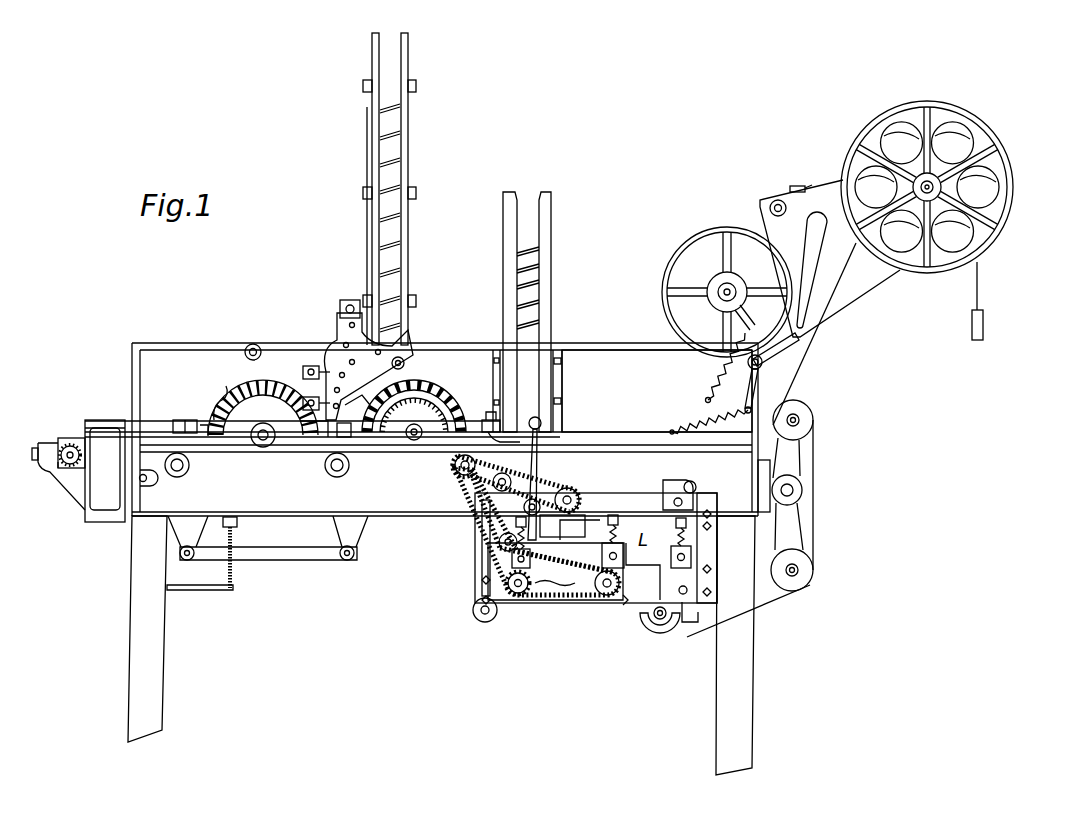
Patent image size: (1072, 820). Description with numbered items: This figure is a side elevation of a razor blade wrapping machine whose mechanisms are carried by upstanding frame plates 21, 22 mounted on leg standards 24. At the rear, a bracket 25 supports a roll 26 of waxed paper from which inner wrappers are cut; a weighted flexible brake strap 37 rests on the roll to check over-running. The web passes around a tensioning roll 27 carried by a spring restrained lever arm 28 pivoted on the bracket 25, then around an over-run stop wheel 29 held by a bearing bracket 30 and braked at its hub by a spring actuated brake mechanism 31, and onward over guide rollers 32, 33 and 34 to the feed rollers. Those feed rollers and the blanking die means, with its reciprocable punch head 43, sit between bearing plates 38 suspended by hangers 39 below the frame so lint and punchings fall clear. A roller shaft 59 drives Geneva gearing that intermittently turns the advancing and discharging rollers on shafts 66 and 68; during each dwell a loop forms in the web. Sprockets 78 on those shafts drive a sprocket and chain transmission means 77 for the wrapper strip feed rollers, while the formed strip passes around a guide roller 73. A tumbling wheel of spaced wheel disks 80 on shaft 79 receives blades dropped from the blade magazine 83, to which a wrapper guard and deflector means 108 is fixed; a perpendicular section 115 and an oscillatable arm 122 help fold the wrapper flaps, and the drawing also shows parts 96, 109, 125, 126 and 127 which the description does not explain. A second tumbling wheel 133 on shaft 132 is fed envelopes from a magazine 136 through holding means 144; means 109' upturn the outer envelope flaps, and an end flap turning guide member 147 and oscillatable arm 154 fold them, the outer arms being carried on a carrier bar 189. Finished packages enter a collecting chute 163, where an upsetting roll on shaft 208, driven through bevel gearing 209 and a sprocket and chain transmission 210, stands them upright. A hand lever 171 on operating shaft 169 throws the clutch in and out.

The frame plate 21 is at (398, 504).
The frame plate 22 is at (572, 352).
The leg standards 24 is at (155, 638).
The bracket 25 is at (836, 277).
The roll of paper 26 is at (945, 187).
The tensioning roll 27 is at (764, 364).
The lever arm 28 is at (796, 342).
The over-run control or stop wheel 29 is at (710, 292).
The bearing bracket 30 is at (712, 322).
The brake mechanism 31 is at (712, 278).
The guide roller 32 is at (814, 418).
The guide roller 33 is at (812, 575).
The guide roller 34 is at (660, 634).
The weighted flexible brake strap 37 is at (983, 280).
The bearing plates 38 is at (626, 604).
The hangers 39 is at (488, 574).
The punch head 43 is at (585, 514).
The roller shaft 59 is at (686, 620).
The shaft 66 is at (600, 600).
The shaft 68 is at (520, 600).
The guide roller 73 is at (490, 624).
The sprocket and chain transmission means 77 is at (490, 536).
The sprockets 78 is at (555, 585).
The shaft 79 is at (414, 445).
The wheel disks 80 is at (430, 384).
The blade magazine 83 is at (551, 287).
The arm 96 is at (494, 444).
The wrapper guard and deflector means 108 is at (486, 422).
The plate 109 is at (384, 360).
The means for upturning the outer side flaps 109' is at (214, 394).
The perpendicular section 115 is at (372, 385).
The oscillatable arm 122 is at (344, 440).
The link 125 is at (174, 548).
The link 126 is at (362, 535).
The bar 127 is at (300, 553).
The shaft 132 is at (262, 447).
The second tumbling wheel 133 is at (263, 386).
The magazine 136 is at (410, 172).
The envelope holding means 144 is at (304, 442).
The end flap turning guide member 147 is at (197, 416).
The oscillatable arm 154 is at (202, 438).
The collecting chute 163 is at (100, 508).
The operating shaft 169 is at (544, 486).
The hand lever 171 is at (540, 455).
The carrier bar 189 is at (233, 573).
The shaft 208 is at (75, 470).
The bevel gearing 209 is at (62, 440).
The sprocket and chain transmission 210 is at (80, 436).